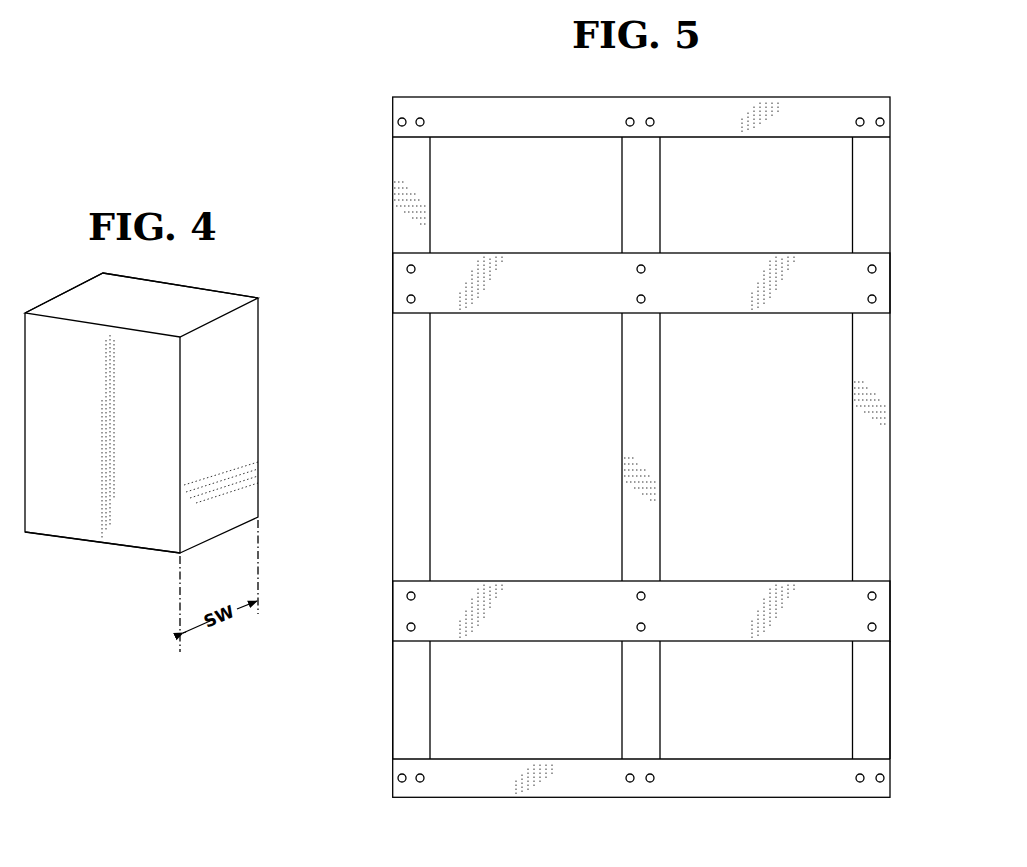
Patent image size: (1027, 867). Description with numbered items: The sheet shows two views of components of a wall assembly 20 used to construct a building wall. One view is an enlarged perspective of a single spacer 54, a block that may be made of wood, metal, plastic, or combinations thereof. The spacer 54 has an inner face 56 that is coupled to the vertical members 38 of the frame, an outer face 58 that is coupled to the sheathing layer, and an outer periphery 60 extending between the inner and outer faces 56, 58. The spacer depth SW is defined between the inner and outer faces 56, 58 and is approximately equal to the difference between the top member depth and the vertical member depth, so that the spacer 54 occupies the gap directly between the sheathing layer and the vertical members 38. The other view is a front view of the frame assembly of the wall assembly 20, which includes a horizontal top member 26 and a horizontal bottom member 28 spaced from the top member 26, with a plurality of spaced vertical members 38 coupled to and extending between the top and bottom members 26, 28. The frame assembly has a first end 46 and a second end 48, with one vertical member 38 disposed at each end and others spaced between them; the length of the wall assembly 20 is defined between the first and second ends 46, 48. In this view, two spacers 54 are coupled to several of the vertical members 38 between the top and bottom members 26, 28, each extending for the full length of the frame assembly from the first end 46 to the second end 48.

In FIG. 5, the wall assembly 20 is at (873, 82).
In FIG. 5, the top member 26 is at (546, 98).
In FIG. 5, the bottom member 28 is at (576, 789).
In FIG. 5, the vertical member 38 is at (420, 461).
In FIG. 5, the first end 46 is at (388, 688).
In FIG. 5, the second end 48 is at (901, 689).
In FIG. 4, the spacer 54 is at (60, 508).
In FIG. 5, the spacer 54 is at (702, 253).
In FIG. 4, the inner face 56 is at (266, 316).
In FIG. 4, the outer face 58 is at (118, 423).
In FIG. 4, the outer periphery 60 is at (224, 400).